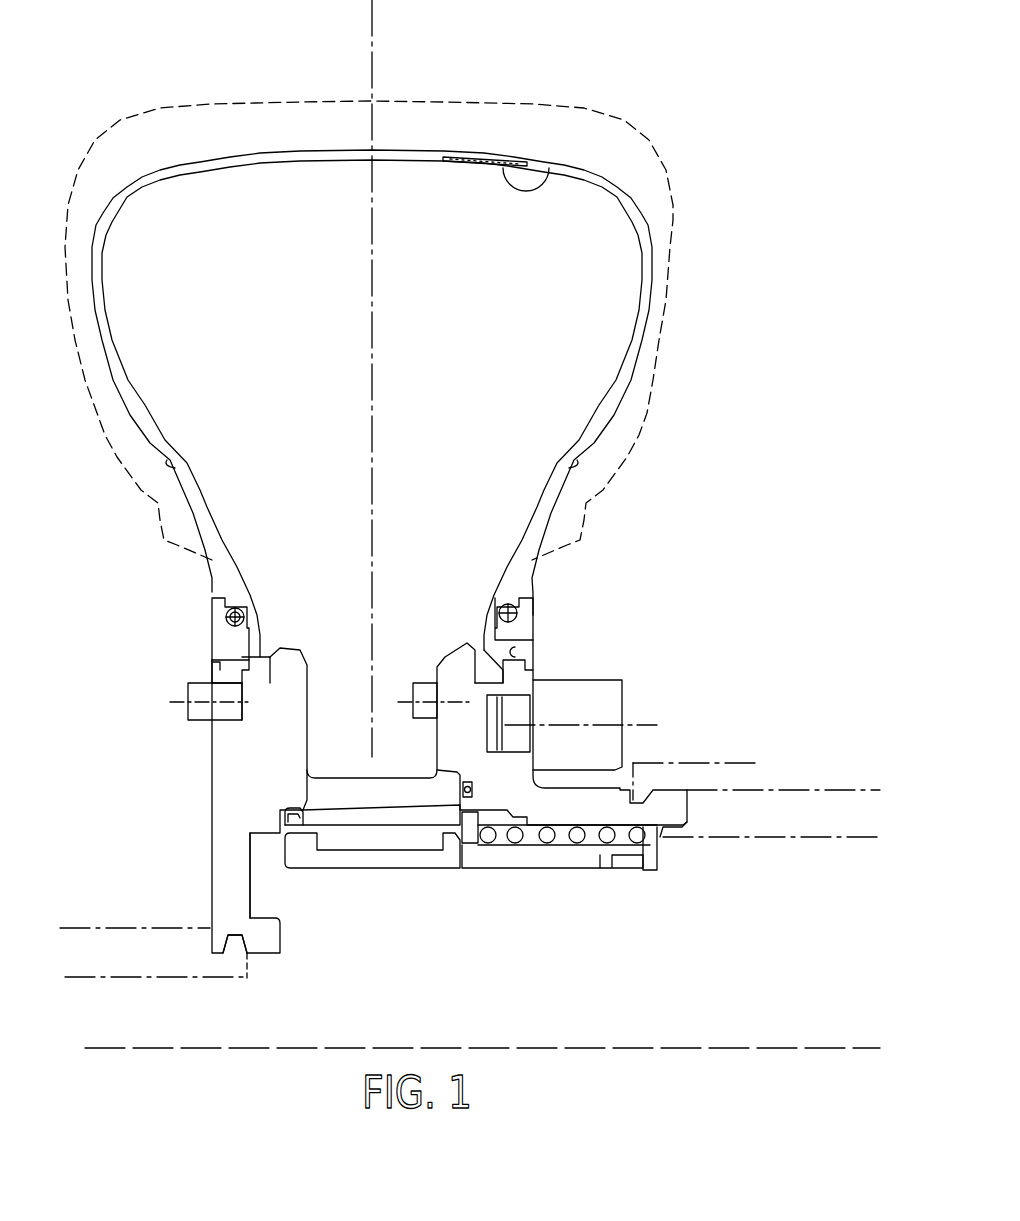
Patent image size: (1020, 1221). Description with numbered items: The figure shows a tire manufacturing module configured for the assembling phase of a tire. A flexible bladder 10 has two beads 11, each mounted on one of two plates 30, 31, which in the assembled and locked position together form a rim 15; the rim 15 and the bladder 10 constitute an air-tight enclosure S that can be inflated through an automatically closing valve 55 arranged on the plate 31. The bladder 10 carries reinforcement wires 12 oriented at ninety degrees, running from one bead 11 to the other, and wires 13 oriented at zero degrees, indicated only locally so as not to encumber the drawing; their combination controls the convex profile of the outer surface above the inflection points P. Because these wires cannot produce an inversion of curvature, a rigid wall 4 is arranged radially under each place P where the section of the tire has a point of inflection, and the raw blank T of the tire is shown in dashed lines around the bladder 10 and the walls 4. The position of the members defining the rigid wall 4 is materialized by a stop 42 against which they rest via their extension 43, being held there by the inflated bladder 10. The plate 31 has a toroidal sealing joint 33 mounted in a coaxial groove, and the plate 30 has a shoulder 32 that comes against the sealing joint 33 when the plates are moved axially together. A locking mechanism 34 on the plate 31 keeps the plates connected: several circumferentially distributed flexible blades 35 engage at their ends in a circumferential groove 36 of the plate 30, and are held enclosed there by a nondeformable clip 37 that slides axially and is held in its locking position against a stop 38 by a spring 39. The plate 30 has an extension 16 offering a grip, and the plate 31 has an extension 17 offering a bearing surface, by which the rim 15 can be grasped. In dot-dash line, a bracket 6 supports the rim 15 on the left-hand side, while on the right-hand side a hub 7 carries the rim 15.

The rigid wall 4 is at (197, 517).
The bracket 6 is at (133, 947).
The hub 7 is at (755, 825).
The flexible bladder 10 is at (650, 248).
The bead 11 is at (253, 675).
The reinforcement wires 12 is at (543, 182).
The wires 13 is at (463, 157).
The rim 15 is at (302, 905).
The extension 16 is at (260, 940).
The extension 17 is at (668, 810).
The plate 30 is at (222, 783).
The plate 31 is at (505, 777).
The shoulder 32 is at (407, 800).
The toroidal sealing joint 33 is at (473, 793).
The locking mechanism 34 is at (642, 863).
The flexible blades 35 is at (370, 830).
The circumferential groove 36 is at (285, 818).
The nondeformable clip 37 is at (578, 860).
The stop 38 is at (470, 837).
The spring 39 is at (607, 837).
The stop 42 is at (212, 677).
The extension 43 is at (212, 633).
The automatically closing valve 55 is at (593, 697).
The inflection point P is at (170, 460).
The raw blank T is at (188, 540).
The air-tight enclosure S is at (397, 349).